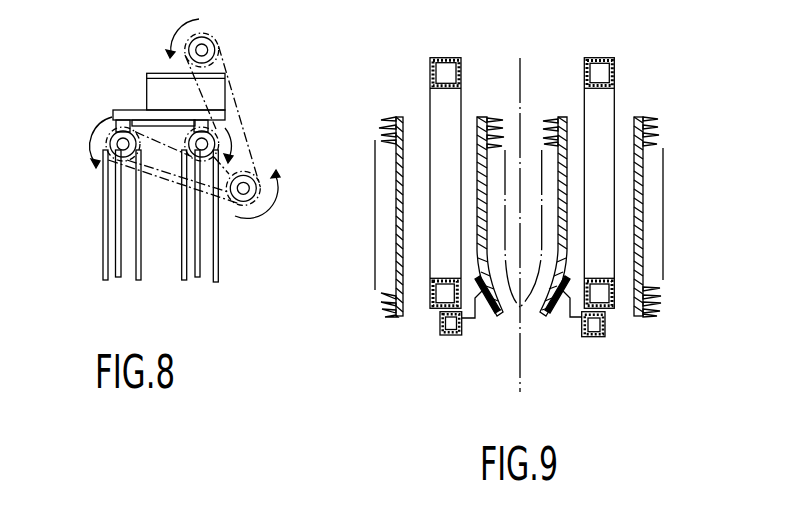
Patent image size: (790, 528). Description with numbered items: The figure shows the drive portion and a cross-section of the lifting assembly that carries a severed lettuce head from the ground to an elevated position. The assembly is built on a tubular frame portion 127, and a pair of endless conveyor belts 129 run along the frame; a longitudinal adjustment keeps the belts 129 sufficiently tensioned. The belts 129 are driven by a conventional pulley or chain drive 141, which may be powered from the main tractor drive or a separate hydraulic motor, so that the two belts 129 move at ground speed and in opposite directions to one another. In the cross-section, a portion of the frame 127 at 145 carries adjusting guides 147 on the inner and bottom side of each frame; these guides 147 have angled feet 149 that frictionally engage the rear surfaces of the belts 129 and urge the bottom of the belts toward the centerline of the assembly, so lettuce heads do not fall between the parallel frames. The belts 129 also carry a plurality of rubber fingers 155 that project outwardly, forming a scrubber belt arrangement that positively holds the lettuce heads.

In FIG. 8, the tubular frame portion 127 is at (120, 268).
In FIG. 9, the tubular frame portion 127 is at (446, 57).
In FIG. 8, the endless conveyor belts 129 is at (103, 262).
In FIG. 9, the endless conveyor belts 129 is at (478, 127).
In FIG. 8, the pulley or chain drive 141 is at (246, 101).
In FIG. 9, the portion of the frame 145 is at (437, 331).
In FIG. 9, the adjusting guides 147 is at (452, 338).
In FIG. 9, the angled feet 149 is at (487, 309).
In FIG. 9, the rubber fingers 155 is at (386, 120).